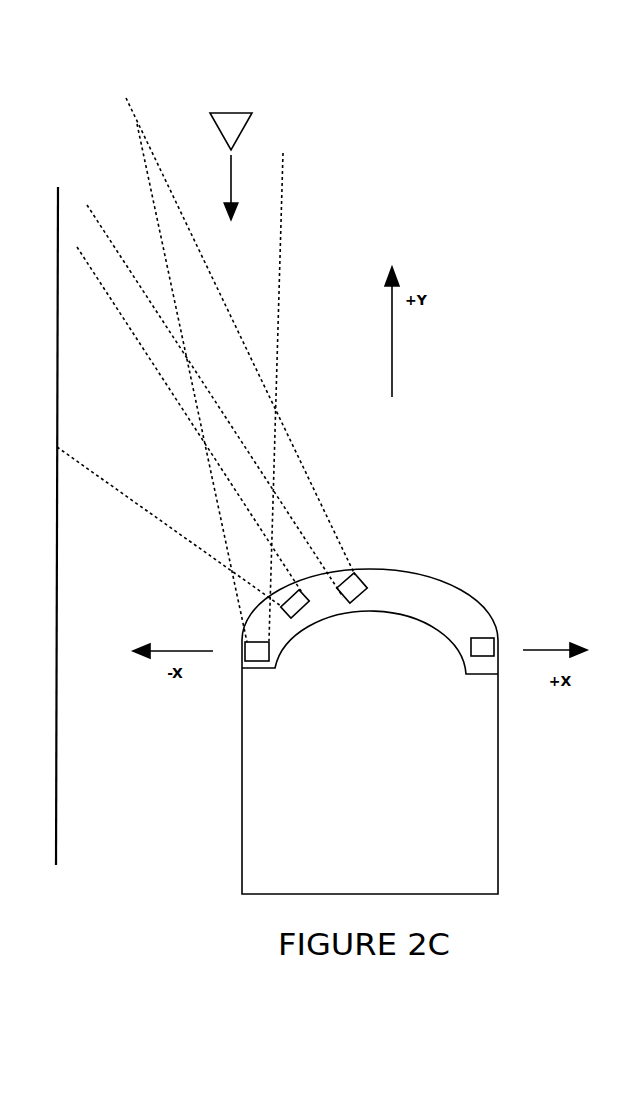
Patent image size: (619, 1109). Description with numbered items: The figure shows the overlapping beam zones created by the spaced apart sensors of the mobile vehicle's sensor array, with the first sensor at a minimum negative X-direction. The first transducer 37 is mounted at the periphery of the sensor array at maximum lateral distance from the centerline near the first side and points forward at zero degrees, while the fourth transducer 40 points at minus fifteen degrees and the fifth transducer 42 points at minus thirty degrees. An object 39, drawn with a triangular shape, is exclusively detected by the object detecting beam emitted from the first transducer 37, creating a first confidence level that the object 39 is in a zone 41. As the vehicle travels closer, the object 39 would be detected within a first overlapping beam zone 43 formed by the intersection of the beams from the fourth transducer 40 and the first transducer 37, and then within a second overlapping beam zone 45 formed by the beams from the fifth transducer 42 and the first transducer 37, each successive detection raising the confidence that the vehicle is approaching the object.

The first transducer 37 is at (258, 652).
The object 39 is at (243, 128).
The fourth transducer 40 is at (352, 592).
The zone 41 is at (262, 287).
The fifth transducer 42 is at (295, 607).
The first overlapping beam zone 43 is at (253, 413).
The second overlapping beam zone 45 is at (232, 527).